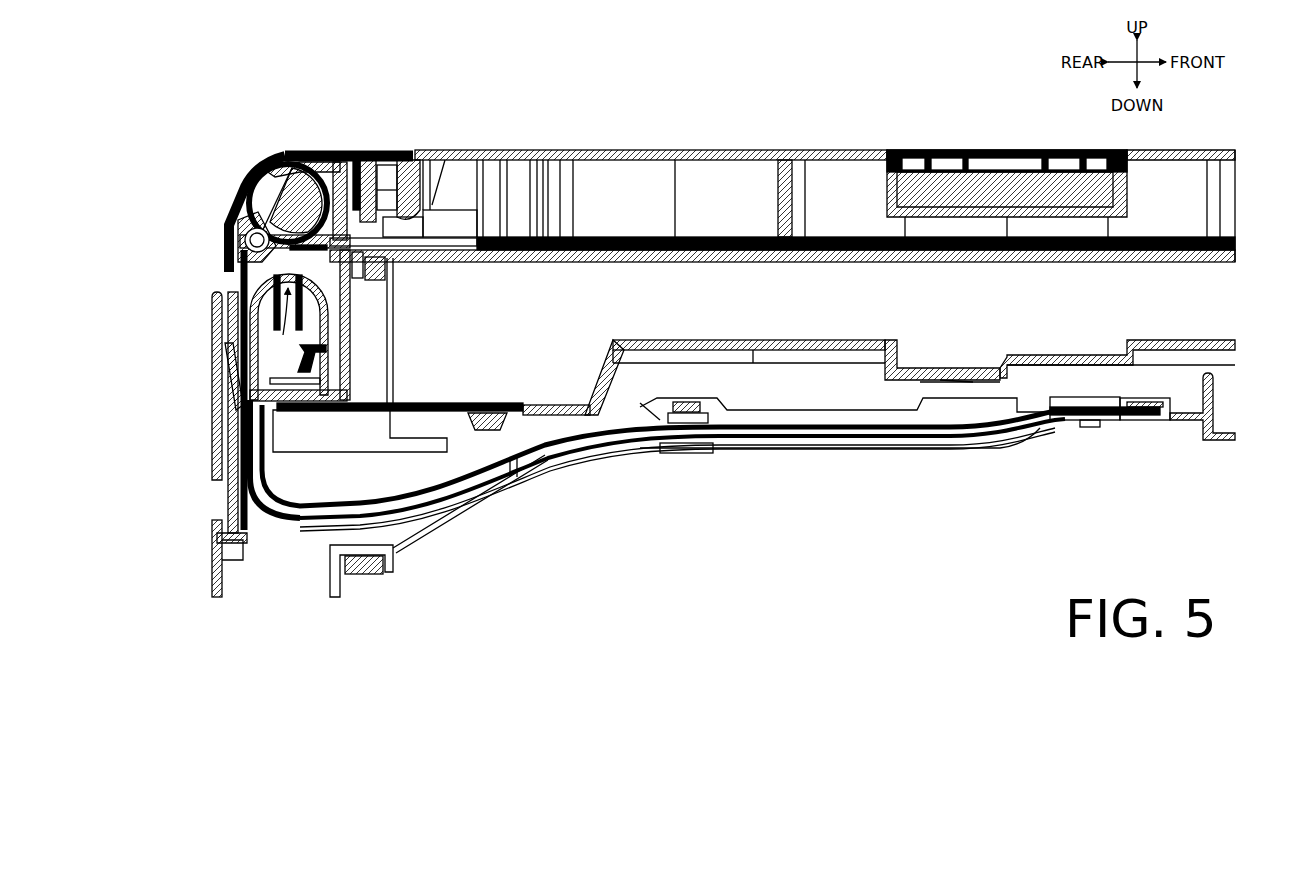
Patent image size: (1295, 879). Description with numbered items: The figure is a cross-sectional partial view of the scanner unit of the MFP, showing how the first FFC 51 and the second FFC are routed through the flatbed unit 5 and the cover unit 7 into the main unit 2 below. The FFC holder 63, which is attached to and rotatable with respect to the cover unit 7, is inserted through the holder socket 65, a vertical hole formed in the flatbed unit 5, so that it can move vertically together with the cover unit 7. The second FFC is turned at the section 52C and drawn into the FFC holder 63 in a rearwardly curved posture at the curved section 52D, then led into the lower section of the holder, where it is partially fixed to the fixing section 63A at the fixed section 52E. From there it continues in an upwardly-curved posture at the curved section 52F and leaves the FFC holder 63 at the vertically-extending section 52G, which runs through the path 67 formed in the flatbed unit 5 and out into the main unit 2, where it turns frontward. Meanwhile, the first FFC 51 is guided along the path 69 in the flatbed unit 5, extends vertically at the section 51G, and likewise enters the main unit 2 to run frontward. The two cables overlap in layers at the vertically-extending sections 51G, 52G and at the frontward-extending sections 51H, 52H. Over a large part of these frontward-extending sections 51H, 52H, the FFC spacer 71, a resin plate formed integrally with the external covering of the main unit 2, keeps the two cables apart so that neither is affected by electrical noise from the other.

The main unit 2 is at (220, 568).
The flatbed unit 5 is at (213, 345).
The cover unit 7 is at (504, 150).
The first flexible flat cable 51 is at (398, 403).
The vertically-extending section of the first FFC 51G is at (266, 451).
The frontward-extending section of the first FFC 51H is at (1074, 400).
The turned section of the second FFC 52C is at (357, 147).
The curved section of the second FFC 52D is at (252, 190).
The fixed section of the second FFC 52E is at (336, 380).
The upwardly-curved section of the second FFC 52F is at (286, 300).
The vertically-extending section of the second FFC 52G is at (240, 443).
The frontward-extending section of the second FFC 52H is at (1076, 431).
The FFC holder 63 is at (228, 235).
The fixing section of the FFC holder 63A is at (304, 360).
The holder socket 65 is at (216, 290).
The path for the second FFC 67 is at (240, 407).
The path for the first FFC 69 is at (335, 400).
The FFC spacer 71 is at (305, 520).